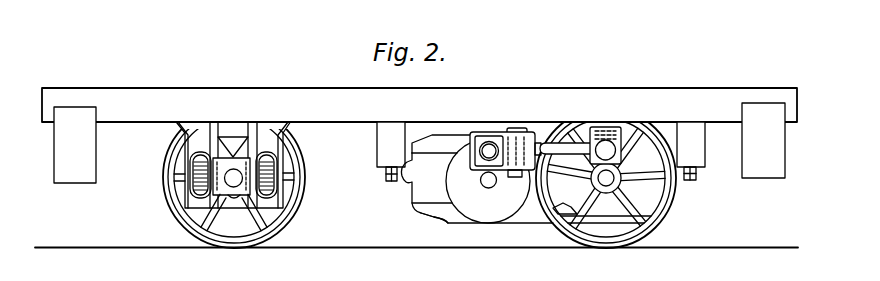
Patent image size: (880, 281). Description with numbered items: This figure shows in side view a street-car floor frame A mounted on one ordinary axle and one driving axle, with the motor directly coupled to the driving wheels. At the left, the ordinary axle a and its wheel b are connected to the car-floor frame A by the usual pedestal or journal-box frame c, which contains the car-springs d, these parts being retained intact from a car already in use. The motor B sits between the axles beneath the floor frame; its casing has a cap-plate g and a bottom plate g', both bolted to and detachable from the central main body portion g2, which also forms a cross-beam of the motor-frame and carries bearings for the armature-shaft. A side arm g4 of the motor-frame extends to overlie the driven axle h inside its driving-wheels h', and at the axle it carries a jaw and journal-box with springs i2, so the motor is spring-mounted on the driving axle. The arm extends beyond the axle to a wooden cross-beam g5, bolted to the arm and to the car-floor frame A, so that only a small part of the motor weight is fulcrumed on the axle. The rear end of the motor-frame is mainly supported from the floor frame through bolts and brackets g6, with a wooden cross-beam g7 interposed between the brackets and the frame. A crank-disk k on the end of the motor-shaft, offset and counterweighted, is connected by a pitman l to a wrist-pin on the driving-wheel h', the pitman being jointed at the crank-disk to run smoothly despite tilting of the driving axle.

The car-floor frame A is at (419, 135).
The ordinary axle a is at (231, 178).
The wheels b is at (237, 177).
The pedestals, box-jaws or journal-box frames c is at (233, 163).
The car-springs d is at (193, 176).
The motor B is at (472, 179).
The cap-plate g is at (490, 152).
The bottom plate g' is at (436, 216).
The central main or body portion g2 is at (426, 180).
The side or arm of motor-frame g4 is at (701, 168).
The wooden cross-beam g5 is at (691, 144).
The bolts and brackets g6 is at (383, 172).
The wooden cross-beam g7 is at (391, 144).
The driven axle h is at (606, 178).
The driving-wheels h' is at (614, 178).
The springs i2 is at (607, 128).
The crank-disks k is at (488, 181).
The pitmen l is at (558, 130).